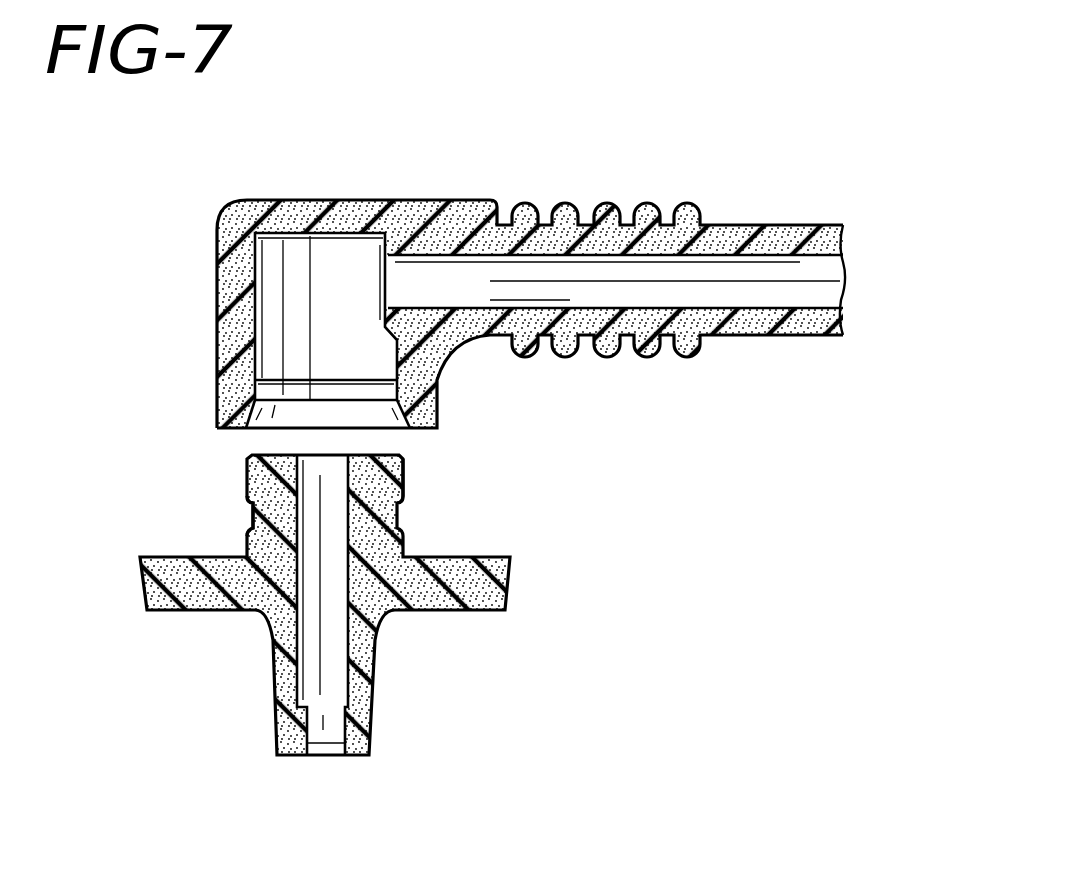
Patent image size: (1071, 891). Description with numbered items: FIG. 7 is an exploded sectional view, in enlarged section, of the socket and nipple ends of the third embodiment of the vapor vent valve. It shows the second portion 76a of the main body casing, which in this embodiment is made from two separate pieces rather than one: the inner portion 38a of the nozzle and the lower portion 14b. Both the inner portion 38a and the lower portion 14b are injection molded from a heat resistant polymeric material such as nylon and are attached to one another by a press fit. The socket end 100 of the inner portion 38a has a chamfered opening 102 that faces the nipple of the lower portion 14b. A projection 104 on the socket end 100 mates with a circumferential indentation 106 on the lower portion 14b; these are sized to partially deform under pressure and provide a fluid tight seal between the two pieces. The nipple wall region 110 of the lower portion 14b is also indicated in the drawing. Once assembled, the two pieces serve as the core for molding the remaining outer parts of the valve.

The second portion 76a is at (160, 258).
The inner portion 38a is at (433, 200).
The socket end 100 is at (378, 376).
The chamfered opening 102 is at (395, 424).
The projection 104 is at (262, 400).
The circumferential indentation 106 is at (250, 518).
The nipple shoulder 110 is at (402, 489).
The lower portion 14b is at (465, 558).